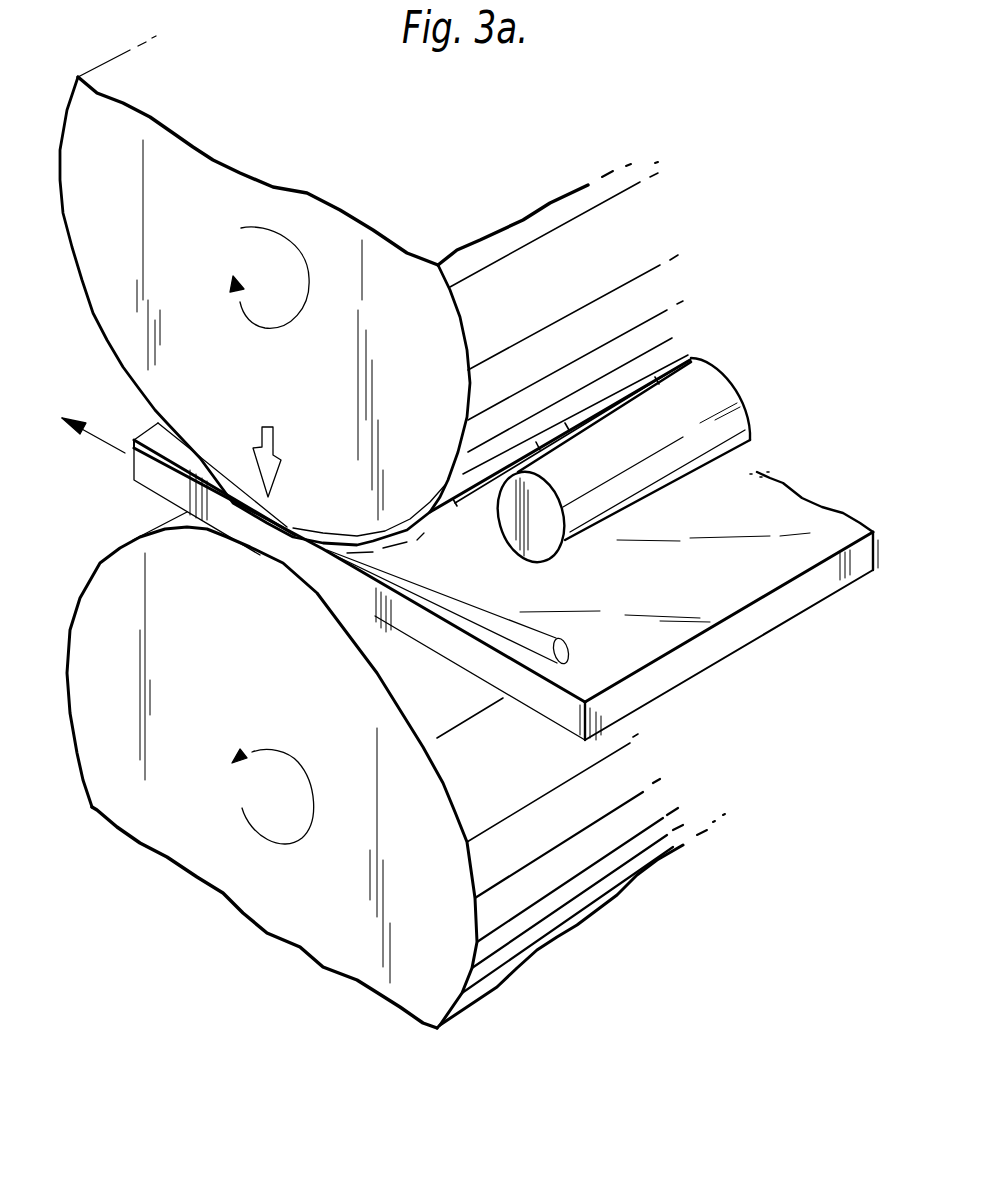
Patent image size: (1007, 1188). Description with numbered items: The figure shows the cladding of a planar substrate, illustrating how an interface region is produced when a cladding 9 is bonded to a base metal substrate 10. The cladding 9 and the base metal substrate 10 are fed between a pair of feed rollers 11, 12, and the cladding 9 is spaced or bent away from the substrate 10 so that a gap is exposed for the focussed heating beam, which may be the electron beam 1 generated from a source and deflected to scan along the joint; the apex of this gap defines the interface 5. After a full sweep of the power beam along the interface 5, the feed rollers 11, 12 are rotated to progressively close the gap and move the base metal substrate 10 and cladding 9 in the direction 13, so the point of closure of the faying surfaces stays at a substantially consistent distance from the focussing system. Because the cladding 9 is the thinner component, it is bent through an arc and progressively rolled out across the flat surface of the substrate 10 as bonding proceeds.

The electron beam 1 is at (570, 650).
The interface 5 is at (320, 557).
The cladding 9 is at (663, 385).
The base metal substrate 10 is at (667, 682).
The feed roller 11 is at (281, 395).
The feed roller 12 is at (287, 682).
The direction 13 is at (95, 437).